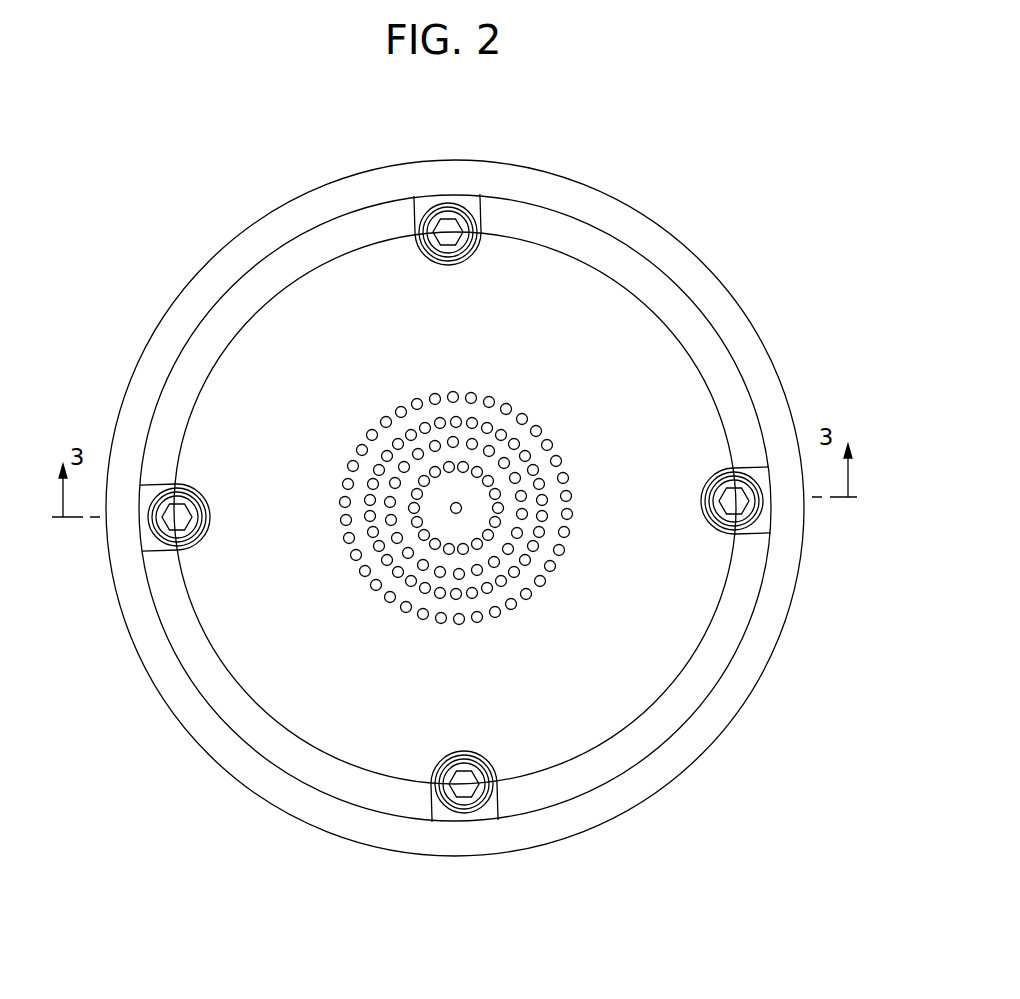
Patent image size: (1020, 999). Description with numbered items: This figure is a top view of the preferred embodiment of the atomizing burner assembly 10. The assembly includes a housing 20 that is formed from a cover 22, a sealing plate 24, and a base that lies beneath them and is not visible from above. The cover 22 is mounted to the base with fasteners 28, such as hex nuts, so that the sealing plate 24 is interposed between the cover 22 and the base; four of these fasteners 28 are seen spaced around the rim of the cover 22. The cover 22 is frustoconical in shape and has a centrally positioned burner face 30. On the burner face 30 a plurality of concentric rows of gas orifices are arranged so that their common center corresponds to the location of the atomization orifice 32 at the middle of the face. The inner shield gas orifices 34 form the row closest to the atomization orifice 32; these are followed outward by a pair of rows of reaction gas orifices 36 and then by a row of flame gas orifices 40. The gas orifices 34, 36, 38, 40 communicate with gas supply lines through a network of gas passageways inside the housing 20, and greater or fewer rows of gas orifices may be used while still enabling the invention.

The atomizing burner assembly 10 is at (628, 164).
The housing 20 is at (211, 764).
The cover 22 is at (360, 718).
The sealing plate 24 is at (745, 672).
The fasteners 28 is at (460, 210).
The burner face 30 is at (457, 487).
The atomization orifice 32 is at (452, 505).
The inner shield gas orifices 34 is at (500, 488).
The reaction gas orifices 36 is at (440, 570).
The gas orifices 38 is at (485, 590).
The flame gas orifices 40 is at (568, 545).